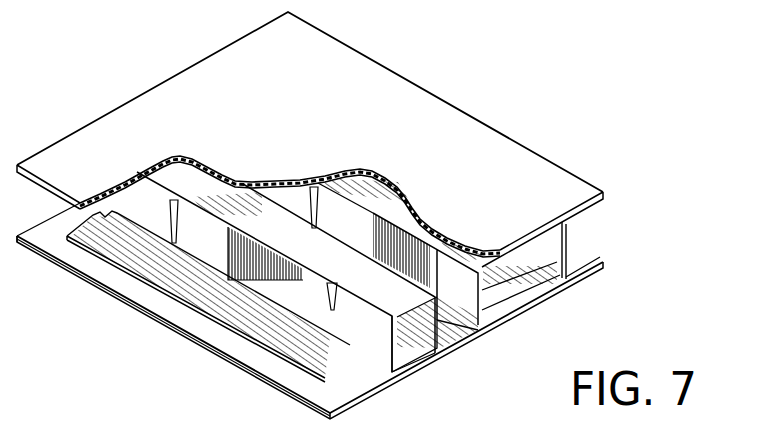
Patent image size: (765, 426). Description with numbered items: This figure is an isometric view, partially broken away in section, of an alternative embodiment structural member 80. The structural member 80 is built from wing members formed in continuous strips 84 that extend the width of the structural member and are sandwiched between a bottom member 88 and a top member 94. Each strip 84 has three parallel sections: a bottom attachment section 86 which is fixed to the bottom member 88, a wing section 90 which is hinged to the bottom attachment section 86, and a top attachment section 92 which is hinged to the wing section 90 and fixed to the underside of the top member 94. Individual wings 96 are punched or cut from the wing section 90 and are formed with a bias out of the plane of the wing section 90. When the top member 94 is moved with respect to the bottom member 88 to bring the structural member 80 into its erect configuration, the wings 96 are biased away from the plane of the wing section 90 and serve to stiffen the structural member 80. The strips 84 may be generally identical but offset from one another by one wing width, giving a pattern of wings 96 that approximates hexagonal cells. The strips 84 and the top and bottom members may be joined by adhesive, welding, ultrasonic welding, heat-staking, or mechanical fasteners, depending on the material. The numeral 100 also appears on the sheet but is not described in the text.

The structural member 80 is at (590, 150).
The continuous strips 84 is at (376, 384).
The bottom attachment section 86 is at (257, 364).
The bottom member 88 is at (600, 258).
The wing section 90 is at (404, 348).
The top attachment section 92 is at (401, 301).
The top member 94 is at (366, 57).
The wings 96 is at (263, 283).
The panel edge region 100 is at (35, 331).